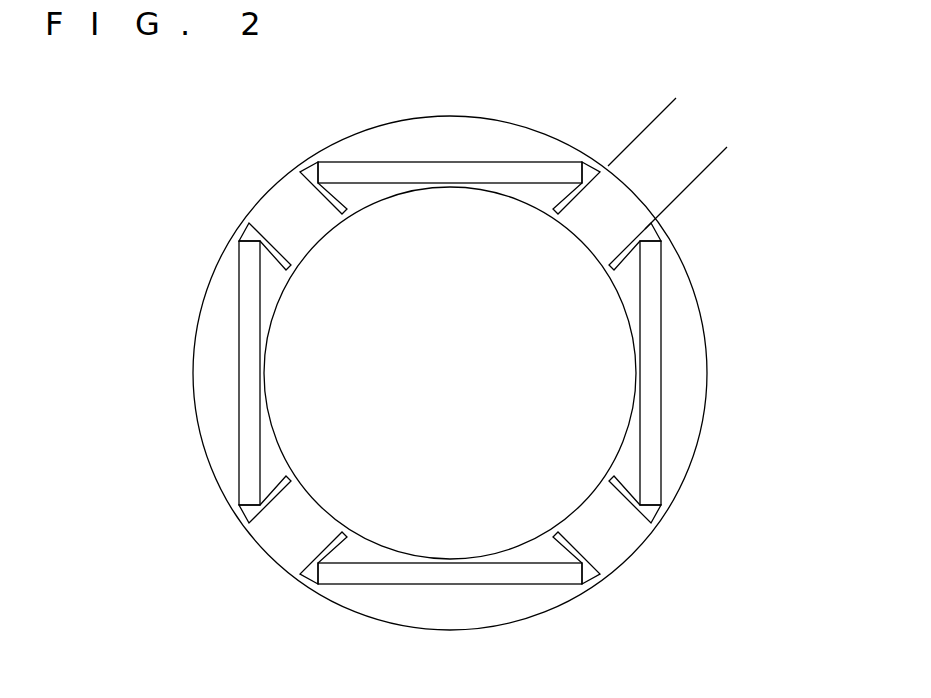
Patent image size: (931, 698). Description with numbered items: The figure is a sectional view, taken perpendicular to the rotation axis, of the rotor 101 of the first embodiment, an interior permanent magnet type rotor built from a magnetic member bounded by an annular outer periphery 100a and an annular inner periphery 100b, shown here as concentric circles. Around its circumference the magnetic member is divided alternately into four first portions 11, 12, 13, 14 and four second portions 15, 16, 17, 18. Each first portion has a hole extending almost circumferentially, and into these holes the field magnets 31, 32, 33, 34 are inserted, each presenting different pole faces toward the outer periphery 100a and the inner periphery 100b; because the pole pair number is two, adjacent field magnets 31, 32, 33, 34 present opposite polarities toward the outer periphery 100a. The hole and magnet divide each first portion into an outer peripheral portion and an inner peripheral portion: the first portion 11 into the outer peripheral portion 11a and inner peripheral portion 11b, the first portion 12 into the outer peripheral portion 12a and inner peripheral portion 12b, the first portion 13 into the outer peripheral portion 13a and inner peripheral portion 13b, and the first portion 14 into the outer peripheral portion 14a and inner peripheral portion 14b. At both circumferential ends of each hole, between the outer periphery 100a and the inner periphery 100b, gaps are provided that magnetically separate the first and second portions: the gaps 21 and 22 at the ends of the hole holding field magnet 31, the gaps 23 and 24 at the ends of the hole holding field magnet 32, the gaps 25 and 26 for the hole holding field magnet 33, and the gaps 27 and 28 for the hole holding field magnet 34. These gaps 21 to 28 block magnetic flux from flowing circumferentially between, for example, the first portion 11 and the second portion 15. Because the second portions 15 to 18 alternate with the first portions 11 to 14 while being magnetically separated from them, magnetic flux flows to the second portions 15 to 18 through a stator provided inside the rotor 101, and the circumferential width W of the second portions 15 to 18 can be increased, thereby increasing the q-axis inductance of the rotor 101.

The first portion 11 is at (626, 375).
The outer peripheral portion 11a is at (683, 365).
The inner peripheral portion 11b is at (625, 302).
The first portion 12 is at (466, 198).
The outer peripheral portion 12a is at (394, 143).
The inner peripheral portion 12b is at (388, 187).
The first portion 13 is at (277, 341).
The outer peripheral portion 13a is at (222, 307).
The inner peripheral portion 13b is at (282, 301).
The first portion 14 is at (482, 549).
The outer peripheral portion 14a is at (373, 588).
The inner peripheral portion 14b is at (389, 556).
The second portion 15 is at (598, 242).
The second portion 16 is at (272, 202).
The second portion 17 is at (283, 557).
The second portion 18 is at (615, 557).
The gap 21 is at (643, 517).
The gap 22 is at (645, 235).
The gap 23 is at (592, 175).
The gap 24 is at (307, 165).
The gap 25 is at (247, 233).
The gap 26 is at (252, 513).
The gap 27 is at (305, 572).
The gap 28 is at (587, 575).
The field magnet 31 is at (647, 435).
The field magnet 32 is at (455, 170).
The field magnet 33 is at (250, 362).
The field magnet 34 is at (473, 578).
The outer periphery 100a is at (695, 292).
The inner periphery 100b is at (628, 420).
The rotor 101 is at (562, 612).
The width of the second portions W is at (658, 116).